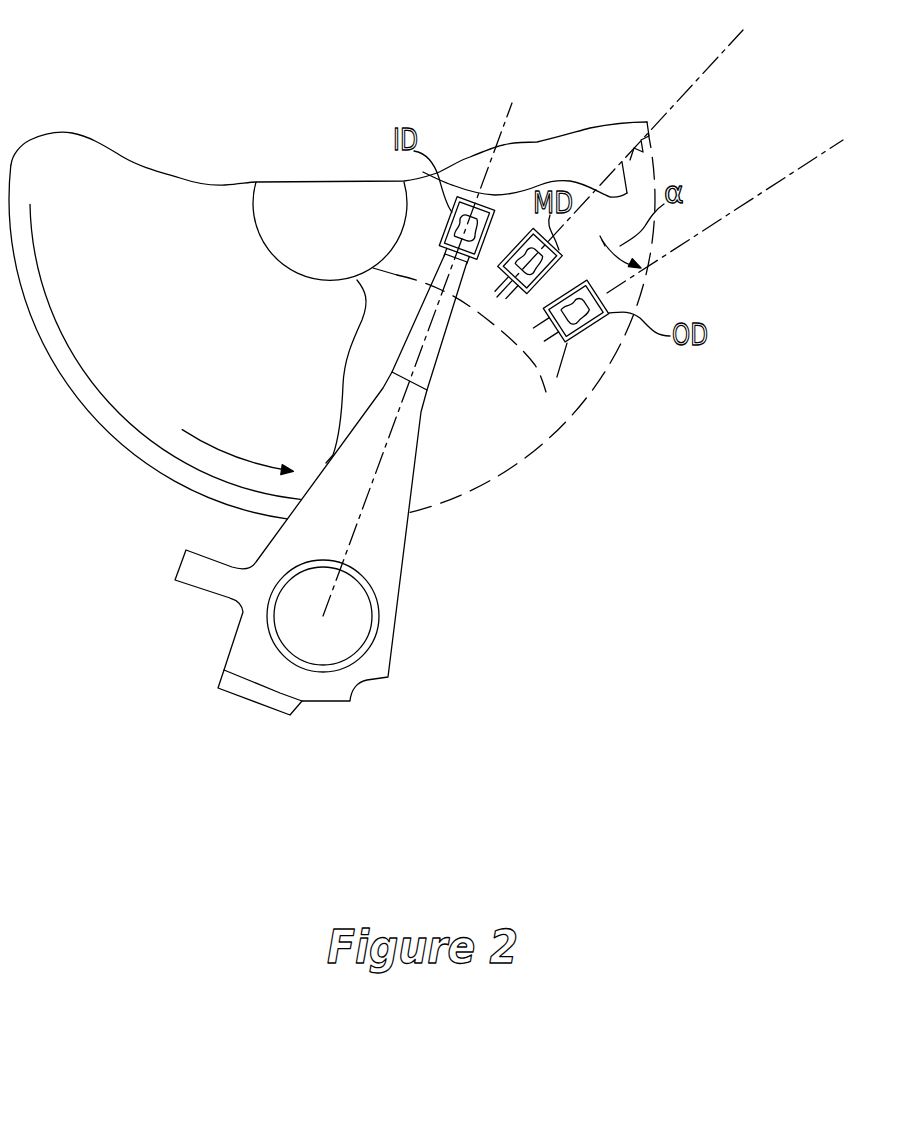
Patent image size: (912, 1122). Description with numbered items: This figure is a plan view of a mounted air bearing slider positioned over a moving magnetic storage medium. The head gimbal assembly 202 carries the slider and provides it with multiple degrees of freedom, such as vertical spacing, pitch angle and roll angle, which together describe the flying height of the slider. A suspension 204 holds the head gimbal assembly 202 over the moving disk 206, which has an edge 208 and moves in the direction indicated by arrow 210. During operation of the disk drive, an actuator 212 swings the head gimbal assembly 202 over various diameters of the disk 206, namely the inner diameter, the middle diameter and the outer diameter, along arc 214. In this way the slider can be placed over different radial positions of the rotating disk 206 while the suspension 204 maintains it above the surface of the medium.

The head gimbal assembly 202 is at (483, 191).
The suspension 204 is at (437, 362).
The disk 206 is at (190, 322).
The edge 208 is at (102, 430).
The arrow 210 is at (247, 462).
The actuator 212 is at (394, 633).
The arc 214 is at (530, 367).